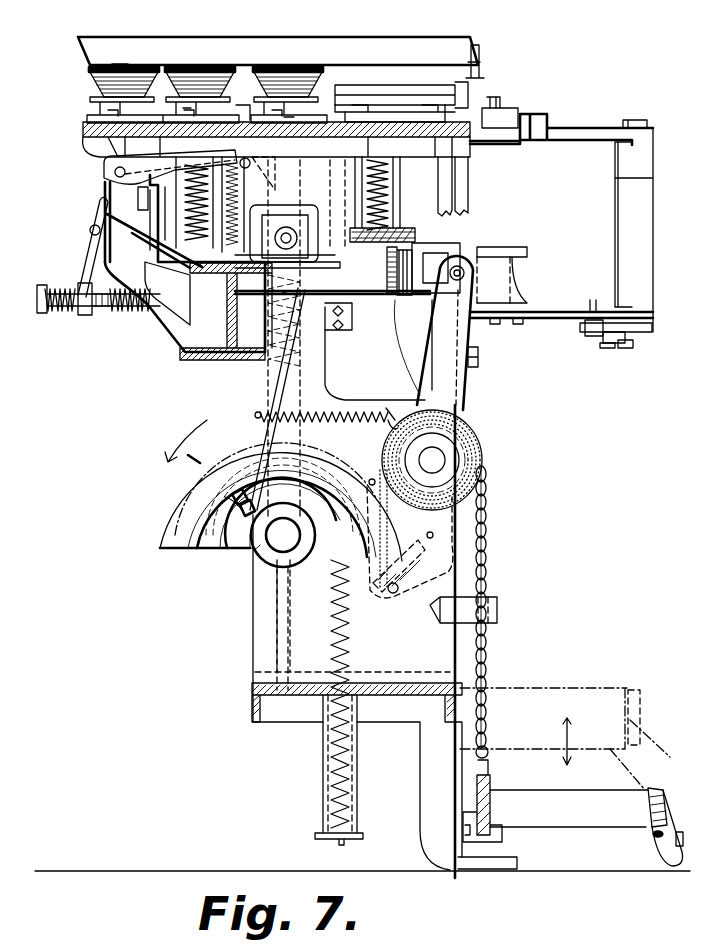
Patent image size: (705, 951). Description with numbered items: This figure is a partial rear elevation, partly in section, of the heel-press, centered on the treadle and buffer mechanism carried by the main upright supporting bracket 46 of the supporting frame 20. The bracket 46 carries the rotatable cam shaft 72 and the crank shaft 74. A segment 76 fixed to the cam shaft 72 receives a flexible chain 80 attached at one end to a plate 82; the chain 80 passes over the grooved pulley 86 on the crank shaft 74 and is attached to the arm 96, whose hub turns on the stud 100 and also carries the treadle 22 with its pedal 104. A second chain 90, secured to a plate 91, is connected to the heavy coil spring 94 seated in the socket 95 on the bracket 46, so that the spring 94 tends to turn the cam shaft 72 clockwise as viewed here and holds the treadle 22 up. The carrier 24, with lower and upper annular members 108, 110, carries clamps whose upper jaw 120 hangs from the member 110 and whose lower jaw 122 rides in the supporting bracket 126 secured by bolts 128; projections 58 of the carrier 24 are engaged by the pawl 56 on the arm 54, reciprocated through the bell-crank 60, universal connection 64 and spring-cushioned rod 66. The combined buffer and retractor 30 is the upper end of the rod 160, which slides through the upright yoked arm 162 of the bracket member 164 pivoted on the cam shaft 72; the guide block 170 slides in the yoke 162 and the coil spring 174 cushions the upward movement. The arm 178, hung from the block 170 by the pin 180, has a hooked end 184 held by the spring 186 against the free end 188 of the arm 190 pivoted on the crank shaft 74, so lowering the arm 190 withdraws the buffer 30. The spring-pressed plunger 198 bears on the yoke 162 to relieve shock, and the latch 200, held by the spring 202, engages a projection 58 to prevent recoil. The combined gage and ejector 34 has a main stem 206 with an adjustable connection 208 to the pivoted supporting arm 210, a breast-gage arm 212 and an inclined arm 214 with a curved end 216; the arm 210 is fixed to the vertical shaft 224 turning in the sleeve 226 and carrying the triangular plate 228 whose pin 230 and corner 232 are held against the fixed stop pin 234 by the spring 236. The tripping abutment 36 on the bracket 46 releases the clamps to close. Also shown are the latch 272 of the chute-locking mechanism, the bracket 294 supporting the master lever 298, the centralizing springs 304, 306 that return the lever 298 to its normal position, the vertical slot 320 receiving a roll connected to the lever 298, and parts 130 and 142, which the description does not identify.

The supporting frame 20 is at (465, 700).
The treadle 22 is at (662, 788).
The carrier 24 is at (88, 130).
The combined buffer and retractor 30 is at (335, 92).
The combined gage and ejector 34 is at (432, 96).
The tripping abutment 36 is at (530, 286).
The main upright supporting bracket 46 is at (258, 634).
The arm 54 is at (118, 220).
The pawl 56 is at (148, 170).
The projections 58 is at (110, 146).
The bell-crank 60 is at (472, 346).
The universal connection 64 is at (462, 247).
The spring-cushioned rod 66 is at (478, 370).
The cam shaft 72 is at (283, 537).
The crank shaft 74 is at (436, 461).
The segment 76 is at (236, 442).
The flexible chain 80 is at (487, 518).
The plate 82 is at (375, 592).
The grooved pulley 86 is at (455, 427).
The chain 90 is at (258, 542).
The plate 91 is at (232, 494).
The heavy coil spring 94 is at (336, 745).
The socket 95 is at (325, 776).
The arm 96 is at (492, 790).
The stud 100 is at (640, 706).
The pedal 104 is at (678, 840).
The lower annular member 108 is at (88, 124).
The upper annular carrier member 110 is at (480, 58).
The upper jaw 120 is at (100, 69).
The lower jaw 122 is at (108, 84).
The supporting bracket 126 is at (288, 118).
The bolts 128 is at (187, 110).
The spring column 130 is at (400, 181).
The top plate 142 is at (122, 64).
The rod 160 is at (310, 336).
The upright yoked arm 162 is at (265, 395).
The bracket member 164 is at (342, 410).
The guide block 170 is at (292, 240).
The coil spring 174 is at (302, 220).
The arm 178 is at (255, 380).
The pin 180 is at (395, 256).
The hooked end 184 is at (232, 505).
The spring 186 is at (393, 414).
The free end 188 is at (170, 488).
The arm 190 is at (392, 426).
The spring-pressed plunger 198 is at (386, 236).
The latch 200 is at (270, 157).
The spring 202 is at (246, 198).
The main stem 206 is at (492, 98).
The adjustable connection 208 is at (502, 100).
The pivoted supporting arm 210 is at (577, 127).
The laterally extending arm 212 is at (472, 62).
The oppositely extending arm 214 is at (383, 90).
The curved end 216 is at (312, 122).
The vertical shaft 224 is at (636, 120).
The sleeve 226 is at (616, 240).
The triangular plate 228 is at (630, 334).
The pin 230 is at (587, 336).
The corner 232 is at (625, 345).
The fixed stop pin 234 is at (596, 318).
The spring 236 is at (603, 345).
The latch 272 is at (480, 576).
The bracket 294 is at (60, 290).
The master lever 298 is at (90, 256).
The centralizing spring 304 is at (132, 310).
The centralizing spring 306 is at (62, 310).
The vertical slot 320 is at (84, 314).